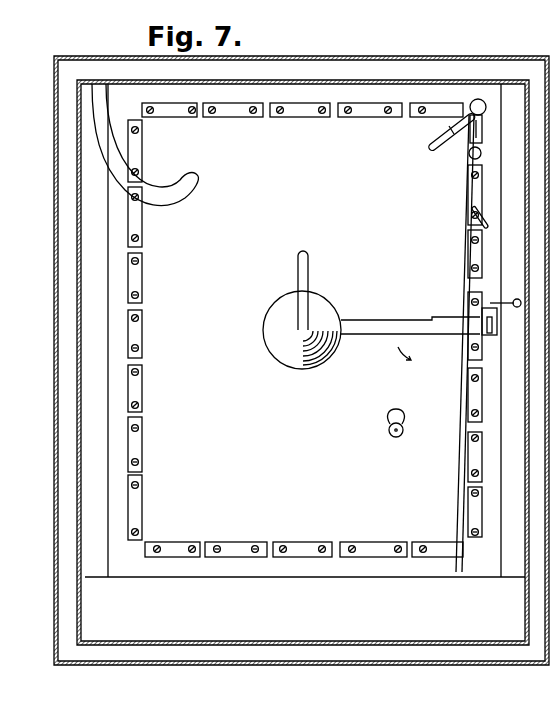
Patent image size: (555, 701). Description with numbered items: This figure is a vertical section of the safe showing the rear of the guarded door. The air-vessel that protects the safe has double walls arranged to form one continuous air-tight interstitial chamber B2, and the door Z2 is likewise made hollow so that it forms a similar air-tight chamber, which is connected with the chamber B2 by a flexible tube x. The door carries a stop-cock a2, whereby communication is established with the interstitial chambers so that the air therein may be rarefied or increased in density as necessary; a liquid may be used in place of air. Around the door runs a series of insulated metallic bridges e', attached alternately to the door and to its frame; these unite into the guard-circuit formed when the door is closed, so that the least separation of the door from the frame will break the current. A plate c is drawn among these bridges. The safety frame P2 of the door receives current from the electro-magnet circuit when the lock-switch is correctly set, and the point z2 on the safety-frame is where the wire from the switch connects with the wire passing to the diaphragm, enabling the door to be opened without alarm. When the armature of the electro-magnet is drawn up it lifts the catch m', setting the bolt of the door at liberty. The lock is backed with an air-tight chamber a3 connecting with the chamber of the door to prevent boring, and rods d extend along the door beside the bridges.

The interstitial chamber B2 is at (301, 360).
The door Z2 is at (303, 362).
The flexible tube x is at (145, 145).
The insulated metallic bridges e' is at (305, 330).
The plate c is at (436, 110).
The air-tight chamber a3 is at (371, 310).
The stop-cock a2 is at (403, 423).
The safety frame P2 is at (451, 119).
The point z2 is at (478, 107).
The rods d is at (470, 343).
The catch m' is at (503, 322).